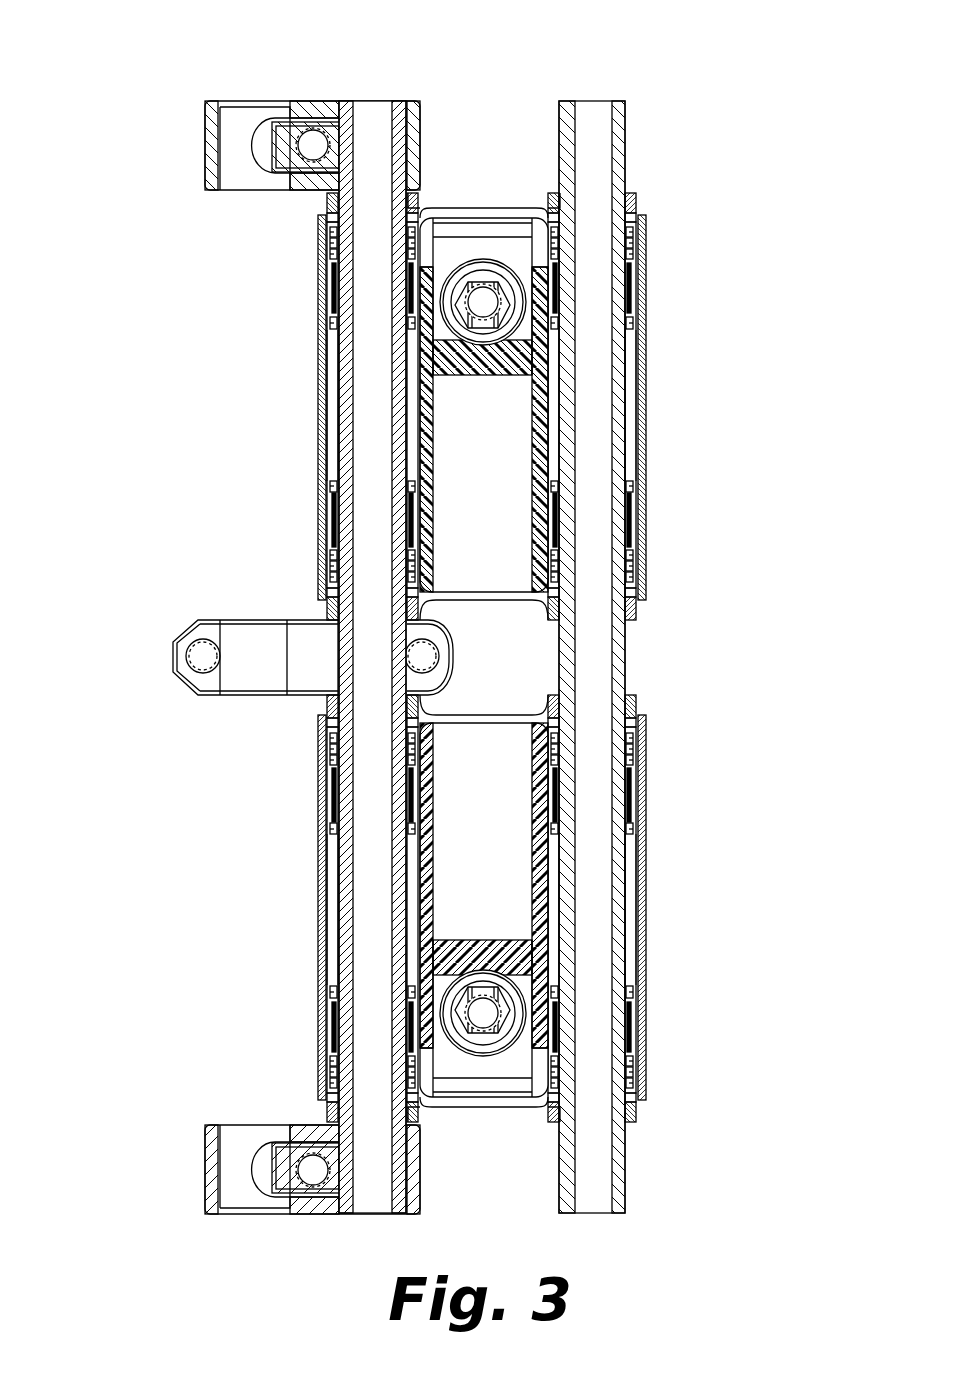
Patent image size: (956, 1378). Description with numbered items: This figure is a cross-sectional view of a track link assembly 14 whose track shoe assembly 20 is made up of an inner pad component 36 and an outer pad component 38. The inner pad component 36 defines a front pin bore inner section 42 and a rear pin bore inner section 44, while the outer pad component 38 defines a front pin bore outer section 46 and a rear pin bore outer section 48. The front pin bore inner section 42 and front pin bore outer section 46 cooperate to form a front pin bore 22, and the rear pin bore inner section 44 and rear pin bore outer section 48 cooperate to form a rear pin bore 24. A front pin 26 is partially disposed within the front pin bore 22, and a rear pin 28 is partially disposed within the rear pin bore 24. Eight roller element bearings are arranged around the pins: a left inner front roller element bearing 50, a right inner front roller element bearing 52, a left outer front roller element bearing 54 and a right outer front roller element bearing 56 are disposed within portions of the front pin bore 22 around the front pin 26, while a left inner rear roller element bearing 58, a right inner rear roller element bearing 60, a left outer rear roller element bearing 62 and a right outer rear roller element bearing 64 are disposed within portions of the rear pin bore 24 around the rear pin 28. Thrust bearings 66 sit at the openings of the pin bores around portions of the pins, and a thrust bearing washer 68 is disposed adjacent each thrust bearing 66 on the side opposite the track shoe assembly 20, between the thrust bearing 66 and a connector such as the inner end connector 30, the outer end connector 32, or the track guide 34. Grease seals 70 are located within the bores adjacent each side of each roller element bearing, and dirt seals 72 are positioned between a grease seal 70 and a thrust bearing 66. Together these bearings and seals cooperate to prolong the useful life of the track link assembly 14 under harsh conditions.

The track link assembly 14 is at (258, 68).
The track shoe assembly 20 is at (484, 658).
The front pin bore 22 is at (330, 437).
The rear pin bore 24 is at (646, 410).
The front pin 26 is at (375, 101).
The rear pin 28 is at (612, 101).
The inner end connector 30 is at (210, 135).
The outer end connector 32 is at (210, 1165).
The track guide 34 is at (173, 663).
The inner pad component 36 is at (510, 215).
The outer pad component 38 is at (510, 1100).
The front pin bore inner section 42 is at (321, 392).
The rear pin bore inner section 44 is at (640, 370).
The front pin bore outer section 46 is at (321, 935).
The rear pin bore outer section 48 is at (640, 880).
The left inner front roller element bearing 50 is at (329, 292).
The right inner front roller element bearing 52 is at (330, 520).
The left outer front roller element bearing 54 is at (329, 850).
The right outer front roller element bearing 56 is at (330, 1035).
The left inner rear roller element bearing 58 is at (638, 287).
The right inner rear roller element bearing 60 is at (639, 520).
The left outer rear roller element bearing 62 is at (639, 800).
The right outer rear roller element bearing 64 is at (639, 1025).
The thrust bearing 66 is at (330, 214).
The thrust bearing washer 68 is at (330, 198).
The grease seal 70 is at (333, 265).
The dirt seal 72 is at (331, 243).